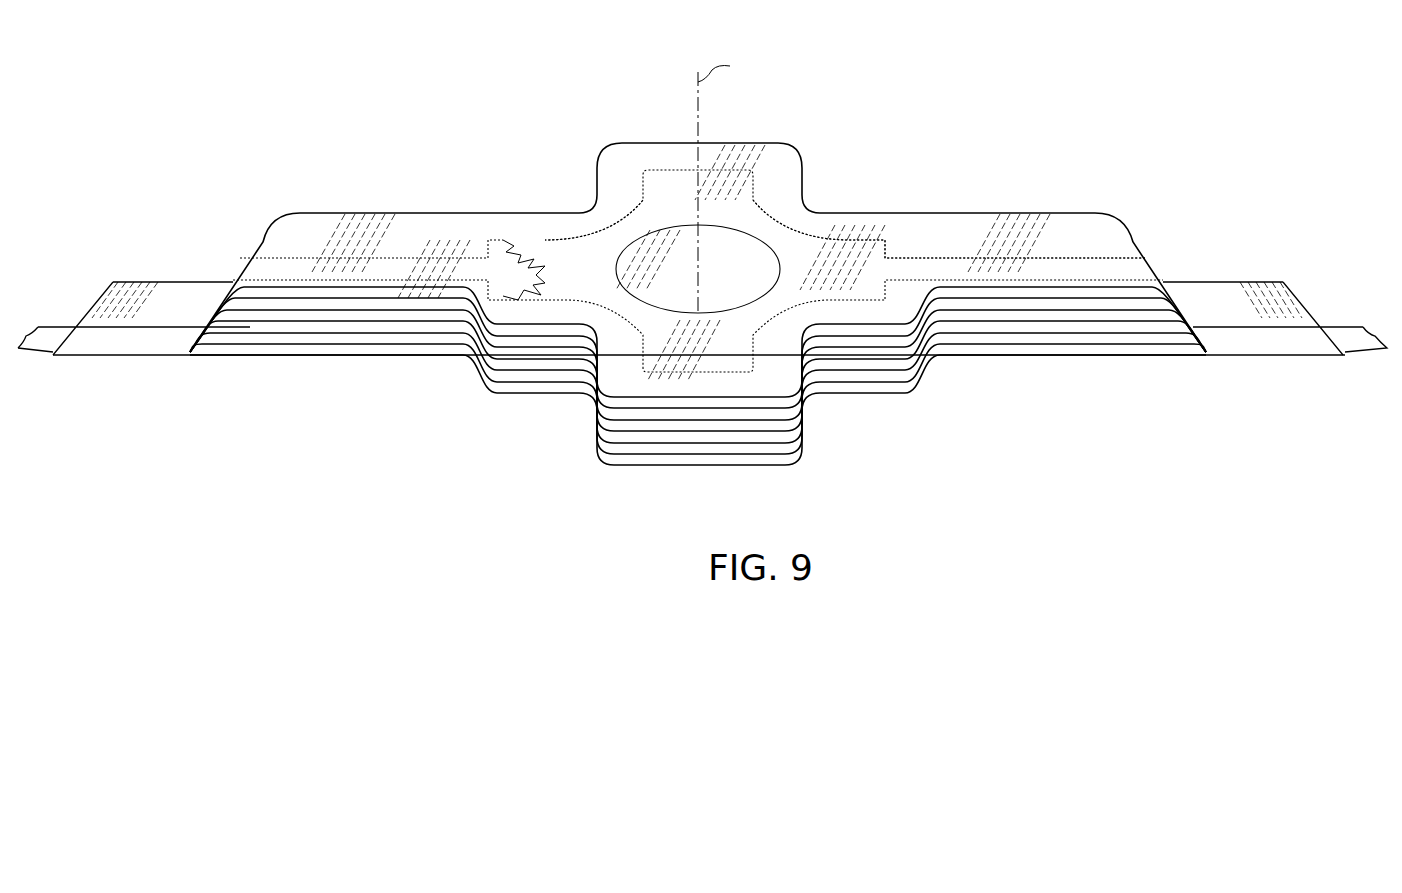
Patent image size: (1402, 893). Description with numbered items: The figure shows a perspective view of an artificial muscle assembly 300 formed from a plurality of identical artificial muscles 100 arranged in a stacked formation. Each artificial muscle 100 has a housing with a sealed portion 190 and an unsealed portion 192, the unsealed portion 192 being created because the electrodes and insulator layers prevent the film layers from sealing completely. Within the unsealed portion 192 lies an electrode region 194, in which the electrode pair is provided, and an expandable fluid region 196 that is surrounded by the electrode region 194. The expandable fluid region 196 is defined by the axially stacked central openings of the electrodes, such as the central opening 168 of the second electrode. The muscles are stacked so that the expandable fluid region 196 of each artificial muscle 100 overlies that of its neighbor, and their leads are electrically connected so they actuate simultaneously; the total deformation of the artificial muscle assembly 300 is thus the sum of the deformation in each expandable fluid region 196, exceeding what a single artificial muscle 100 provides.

The artificial muscle assembly 300 is at (1092, 118).
The sealed portion 190 is at (352, 193).
The artificial muscle 100 is at (258, 278).
The unsealed portion 192 is at (543, 243).
The expandable fluid region 196 is at (643, 257).
The central opening 168 is at (753, 255).
The electrode region 194 is at (852, 263).